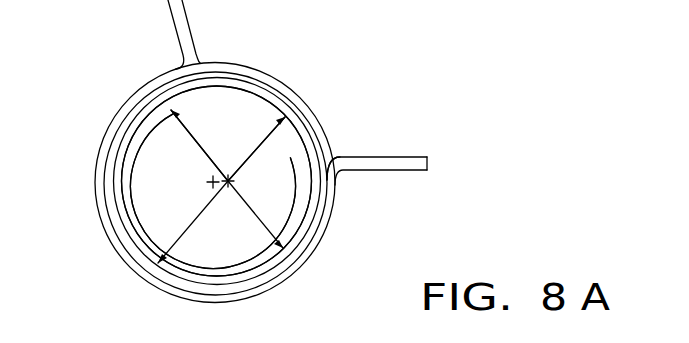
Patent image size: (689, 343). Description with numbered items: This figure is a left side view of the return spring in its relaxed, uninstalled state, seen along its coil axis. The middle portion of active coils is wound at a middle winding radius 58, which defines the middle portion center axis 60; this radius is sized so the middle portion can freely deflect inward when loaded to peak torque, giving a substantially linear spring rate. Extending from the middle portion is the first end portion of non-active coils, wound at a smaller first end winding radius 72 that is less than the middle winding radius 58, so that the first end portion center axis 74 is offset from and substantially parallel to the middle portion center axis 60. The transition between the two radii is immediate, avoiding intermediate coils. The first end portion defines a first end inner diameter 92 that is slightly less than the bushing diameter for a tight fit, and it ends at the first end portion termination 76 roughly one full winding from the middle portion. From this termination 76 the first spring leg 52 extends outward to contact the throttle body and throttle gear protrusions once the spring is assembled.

The first spring leg 52 is at (395, 158).
The middle winding radius 58 is at (218, 232).
The middle portion center axis 60 is at (228, 180).
The first end winding radius 72 is at (257, 148).
The first end portion center axis 74 is at (228, 184).
The first end portion termination 76 is at (337, 170).
The first end inner diameter 92 is at (197, 138).